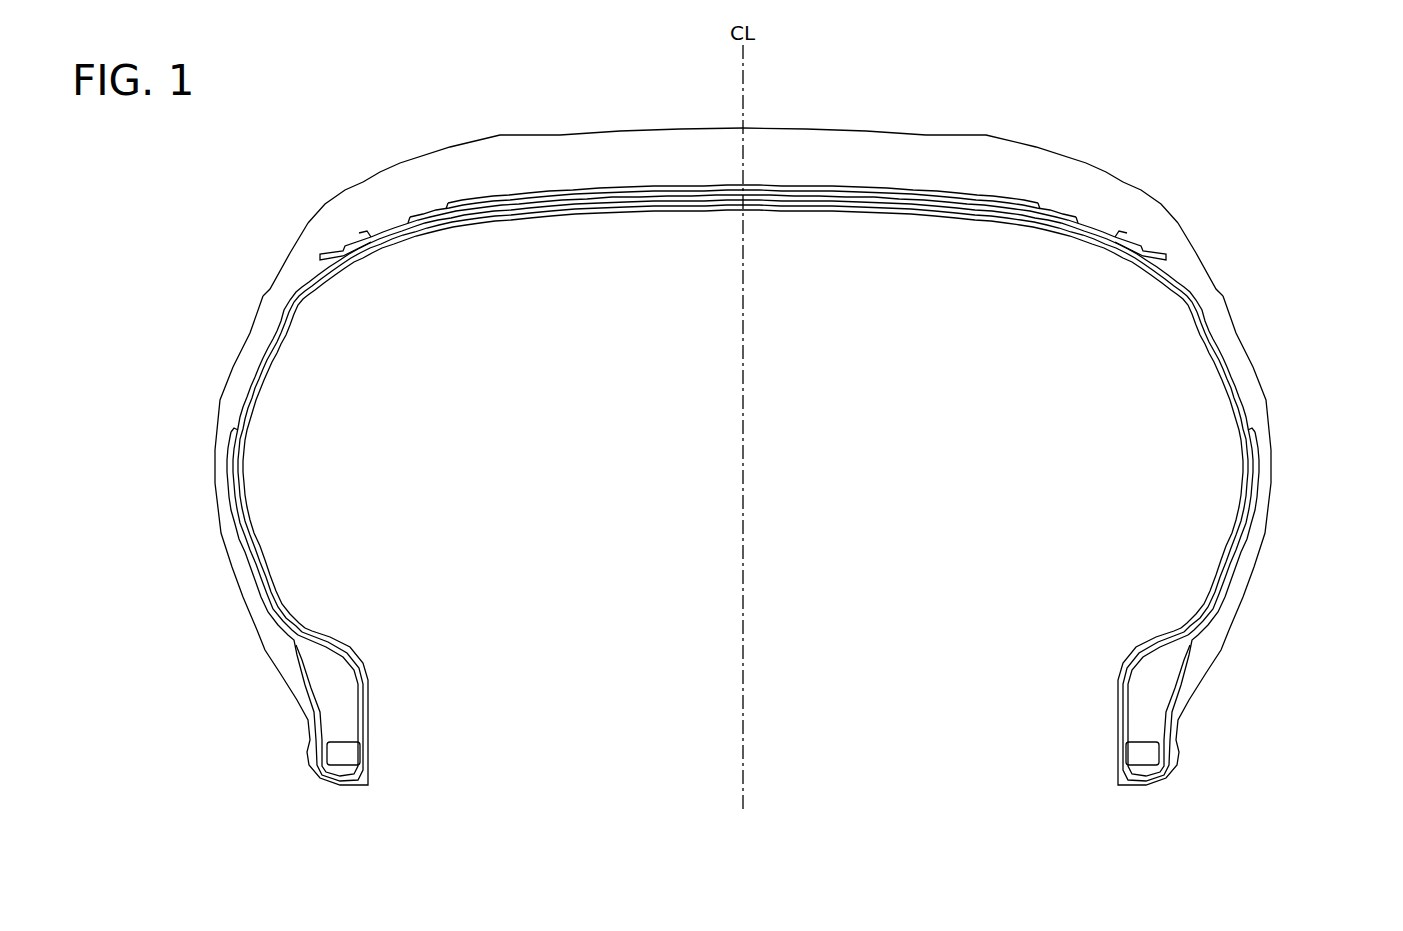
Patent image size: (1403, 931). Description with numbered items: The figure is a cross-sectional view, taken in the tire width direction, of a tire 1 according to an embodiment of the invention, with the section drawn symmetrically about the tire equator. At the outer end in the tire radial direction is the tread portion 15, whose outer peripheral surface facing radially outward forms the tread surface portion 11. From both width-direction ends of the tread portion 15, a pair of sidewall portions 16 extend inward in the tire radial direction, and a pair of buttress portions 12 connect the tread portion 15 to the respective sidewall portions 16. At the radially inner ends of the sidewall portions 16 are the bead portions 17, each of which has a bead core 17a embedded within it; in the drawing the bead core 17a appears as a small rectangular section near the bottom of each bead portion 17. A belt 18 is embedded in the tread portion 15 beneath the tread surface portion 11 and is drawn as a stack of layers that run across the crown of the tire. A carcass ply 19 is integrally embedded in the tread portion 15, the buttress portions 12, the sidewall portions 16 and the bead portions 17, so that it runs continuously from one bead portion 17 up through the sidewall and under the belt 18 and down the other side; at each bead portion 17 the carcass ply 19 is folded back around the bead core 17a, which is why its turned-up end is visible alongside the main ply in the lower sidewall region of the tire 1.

The tire 1 is at (1222, 110).
The tread surface portion 11 is at (638, 127).
The buttress portion 12 is at (307, 228).
The tread portion 15 is at (353, 178).
The sidewall portion 16 is at (214, 450).
The bead portion 17 is at (305, 753).
The bead core 17a is at (343, 757).
The belt 18 is at (857, 184).
The carcass ply 19 is at (1240, 377).